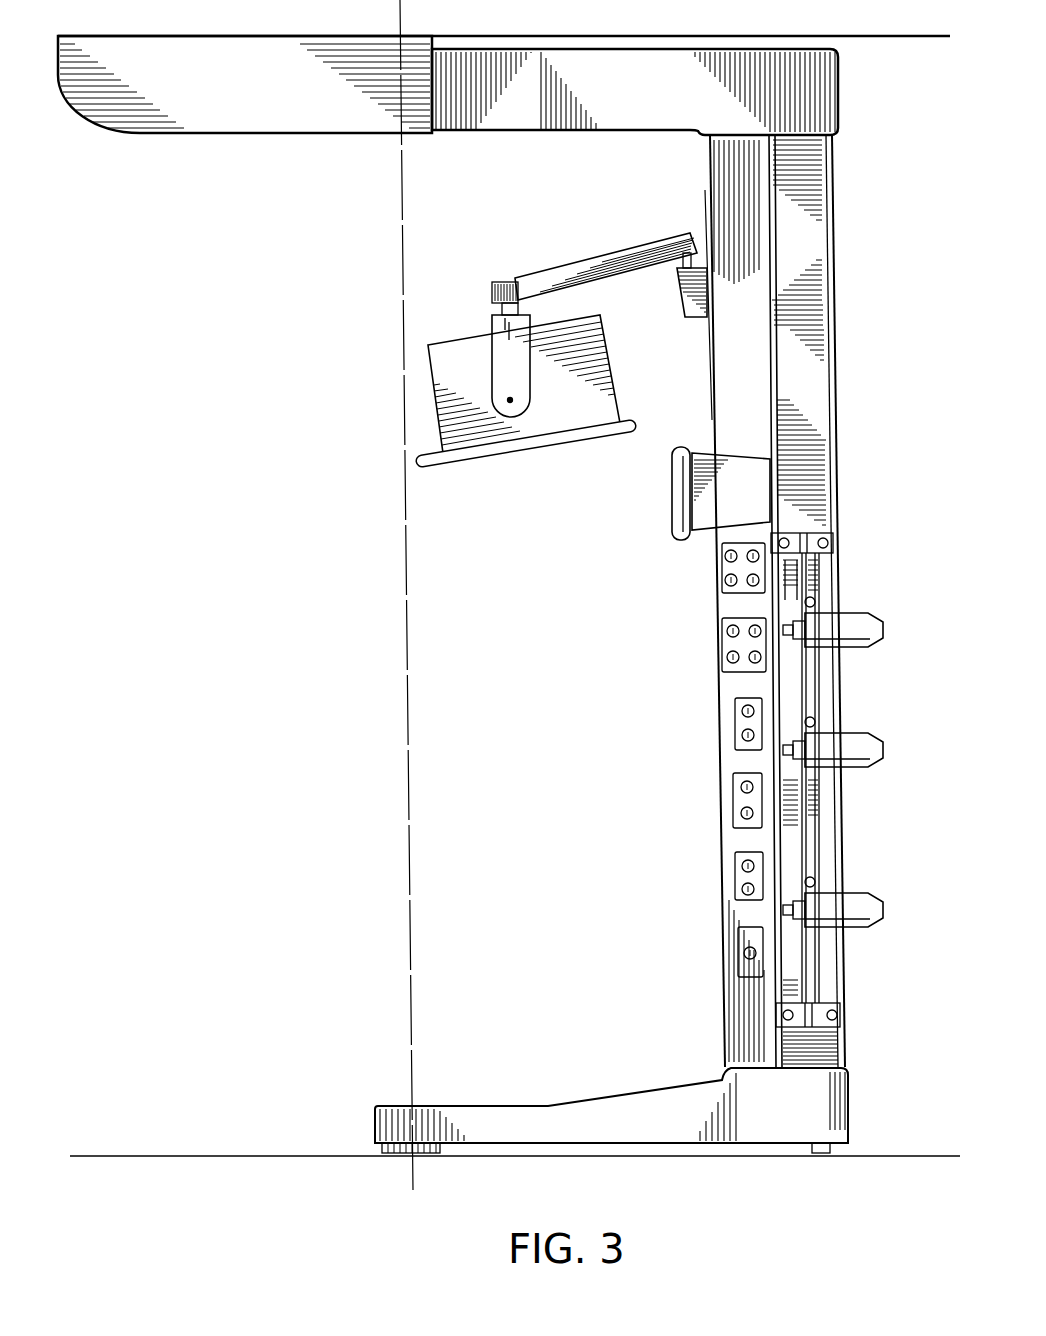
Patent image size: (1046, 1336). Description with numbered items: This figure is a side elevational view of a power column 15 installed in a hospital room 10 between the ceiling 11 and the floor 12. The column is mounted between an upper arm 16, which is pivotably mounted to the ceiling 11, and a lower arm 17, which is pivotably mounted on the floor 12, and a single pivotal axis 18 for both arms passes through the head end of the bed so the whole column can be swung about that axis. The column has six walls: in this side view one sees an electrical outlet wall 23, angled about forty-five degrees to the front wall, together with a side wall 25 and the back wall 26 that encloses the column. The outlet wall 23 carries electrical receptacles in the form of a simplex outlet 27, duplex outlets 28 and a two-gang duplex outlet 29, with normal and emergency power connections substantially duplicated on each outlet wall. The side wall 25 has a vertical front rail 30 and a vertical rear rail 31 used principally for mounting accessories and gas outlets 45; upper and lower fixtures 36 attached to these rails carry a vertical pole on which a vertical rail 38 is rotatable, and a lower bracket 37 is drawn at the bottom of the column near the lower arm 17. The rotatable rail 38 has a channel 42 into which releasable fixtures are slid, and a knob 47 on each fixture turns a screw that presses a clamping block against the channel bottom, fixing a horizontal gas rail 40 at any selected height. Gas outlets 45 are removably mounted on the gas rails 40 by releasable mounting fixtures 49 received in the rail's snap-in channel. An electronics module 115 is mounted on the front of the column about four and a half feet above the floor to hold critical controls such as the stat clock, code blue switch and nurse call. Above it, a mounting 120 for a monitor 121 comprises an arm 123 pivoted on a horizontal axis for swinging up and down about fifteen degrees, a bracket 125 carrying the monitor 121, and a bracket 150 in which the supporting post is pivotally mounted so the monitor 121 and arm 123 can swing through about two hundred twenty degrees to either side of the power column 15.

The hospital room 10 is at (190, 580).
The ceiling 11 is at (878, 37).
The floor 12 is at (182, 1150).
The power column 15 is at (771, 600).
The upper arm 16 is at (628, 132).
The lower arm 17 is at (508, 1083).
The pivotal axis 18 is at (410, 746).
The electrical outlet wall 23 is at (724, 151).
The side wall 25 is at (802, 153).
The back wall 26 is at (828, 184).
The simplex outlet 27 is at (738, 957).
The duplex outlet 28 is at (733, 746).
The two-gang duplex outlet 29 is at (722, 583).
The vertical front rail 30 is at (772, 351).
The vertical rear rail 31 is at (826, 346).
The fixture 36 is at (818, 534).
The lower bracket 37 is at (838, 1019).
The vertical rail 38 is at (812, 834).
The horizontal gas rail 40 is at (877, 615).
The channel 42 is at (812, 567).
The gas outlet 45 is at (782, 912).
The knob 47 is at (815, 722).
The releasable mounting fixture 49 is at (792, 636).
The electronics module 115 is at (692, 521).
The mounting 120 is at (489, 263).
The monitor 121 is at (428, 381).
The arm 123 is at (600, 235).
The bracket 125 is at (492, 292).
The bracket 150 is at (677, 292).